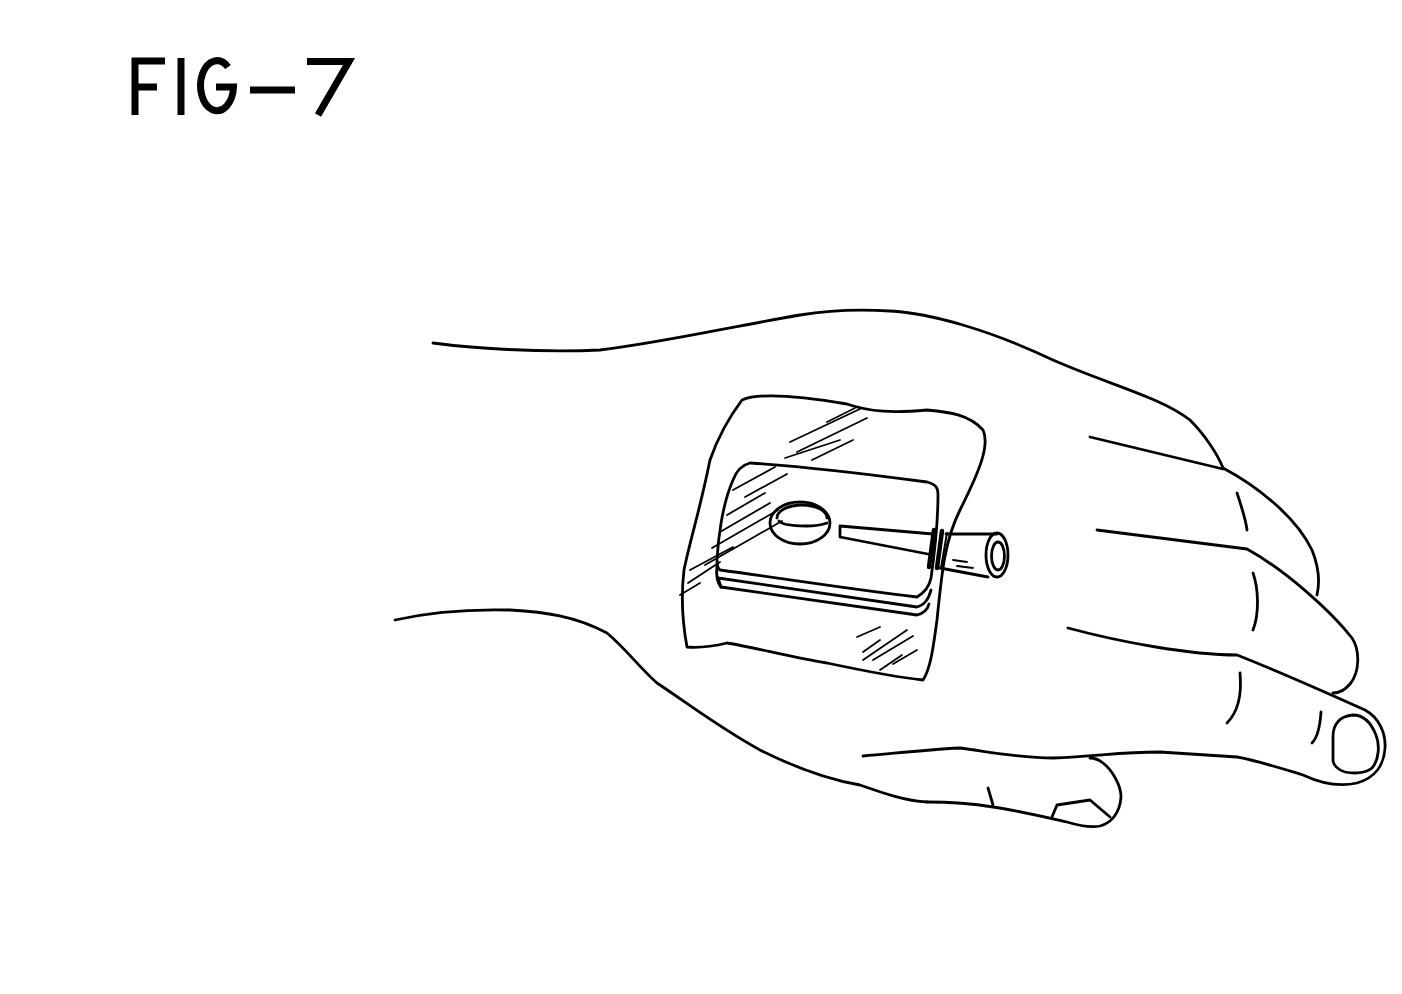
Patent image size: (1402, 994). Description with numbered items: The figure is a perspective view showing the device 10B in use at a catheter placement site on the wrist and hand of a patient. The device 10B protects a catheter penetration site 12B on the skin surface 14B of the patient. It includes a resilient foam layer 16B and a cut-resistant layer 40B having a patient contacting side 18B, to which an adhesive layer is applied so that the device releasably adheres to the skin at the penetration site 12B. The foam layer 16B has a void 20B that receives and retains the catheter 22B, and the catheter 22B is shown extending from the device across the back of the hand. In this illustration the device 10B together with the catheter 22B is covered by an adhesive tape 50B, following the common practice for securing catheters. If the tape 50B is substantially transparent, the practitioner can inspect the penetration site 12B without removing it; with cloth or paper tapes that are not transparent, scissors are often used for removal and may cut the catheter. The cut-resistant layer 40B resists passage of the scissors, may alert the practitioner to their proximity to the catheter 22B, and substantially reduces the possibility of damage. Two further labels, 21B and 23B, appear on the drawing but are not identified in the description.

The device 10B is at (630, 460).
The catheter penetration site 12B is at (824, 522).
The skin surface 14B is at (641, 536).
The resilient foam layer 16B is at (755, 480).
The patient contacting side 18B is at (780, 592).
The void 20B is at (945, 560).
The catheter tube 21B is at (848, 550).
The catheter 22B is at (977, 537).
The aperture 23B is at (807, 522).
The cut-resistant layer 40B is at (733, 588).
The adhesive tape 50B is at (762, 407).